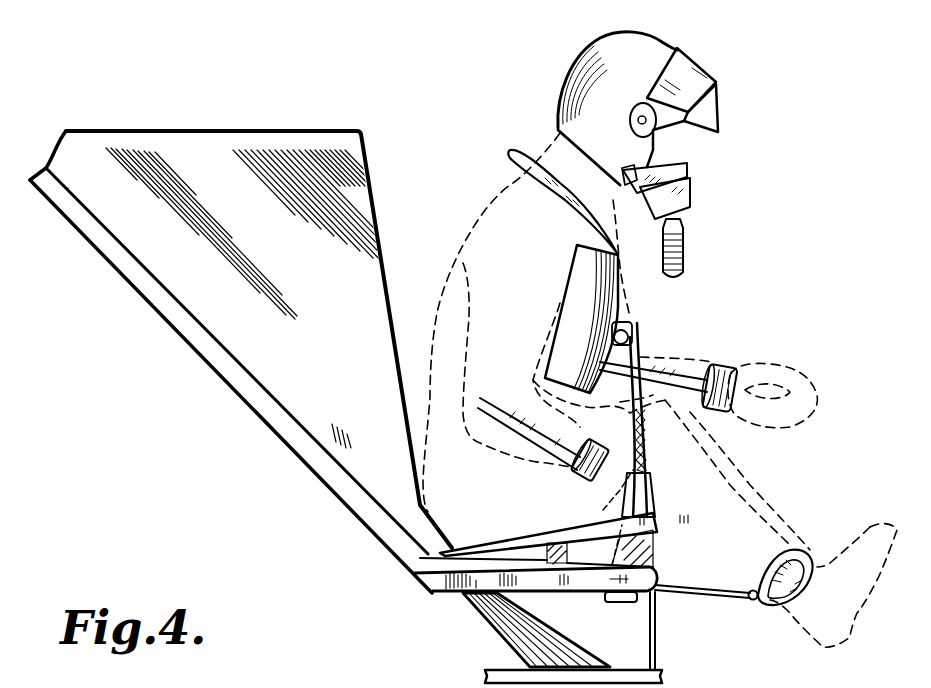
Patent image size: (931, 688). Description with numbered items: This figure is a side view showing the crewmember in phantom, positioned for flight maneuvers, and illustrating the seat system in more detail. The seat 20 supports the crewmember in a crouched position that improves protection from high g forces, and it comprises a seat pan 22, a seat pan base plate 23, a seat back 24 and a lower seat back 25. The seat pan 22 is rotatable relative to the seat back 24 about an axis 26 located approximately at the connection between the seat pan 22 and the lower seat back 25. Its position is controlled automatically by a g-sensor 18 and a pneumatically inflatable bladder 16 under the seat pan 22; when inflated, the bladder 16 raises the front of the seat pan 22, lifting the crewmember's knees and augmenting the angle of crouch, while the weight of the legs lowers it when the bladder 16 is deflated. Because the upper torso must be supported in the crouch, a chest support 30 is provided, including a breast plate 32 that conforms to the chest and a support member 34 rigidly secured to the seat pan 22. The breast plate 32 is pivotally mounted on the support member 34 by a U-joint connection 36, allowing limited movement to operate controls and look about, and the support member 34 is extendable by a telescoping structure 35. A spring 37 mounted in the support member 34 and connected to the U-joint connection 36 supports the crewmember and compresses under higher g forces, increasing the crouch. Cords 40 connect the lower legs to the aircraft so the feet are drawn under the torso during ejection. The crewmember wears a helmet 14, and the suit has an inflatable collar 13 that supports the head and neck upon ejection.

The collar 13 is at (513, 153).
The helmet 14 is at (673, 43).
The pneumatically inflatable bladder 16 is at (673, 553).
The g-sensor 18 is at (620, 600).
The seat 20 is at (177, 348).
The seat pan 22 is at (453, 562).
The seat pan base plate 23 is at (503, 580).
The seat back 24 is at (363, 173).
The lower seat back 25 is at (430, 520).
The axis 26 is at (430, 553).
The chest support 30 is at (652, 321).
The breast plate 32 is at (620, 272).
The support member 34 is at (628, 357).
The telescoping structure 35 is at (635, 483).
The U-joint connection 36 is at (632, 343).
The spring 37 is at (635, 444).
The cords 40 is at (727, 593).